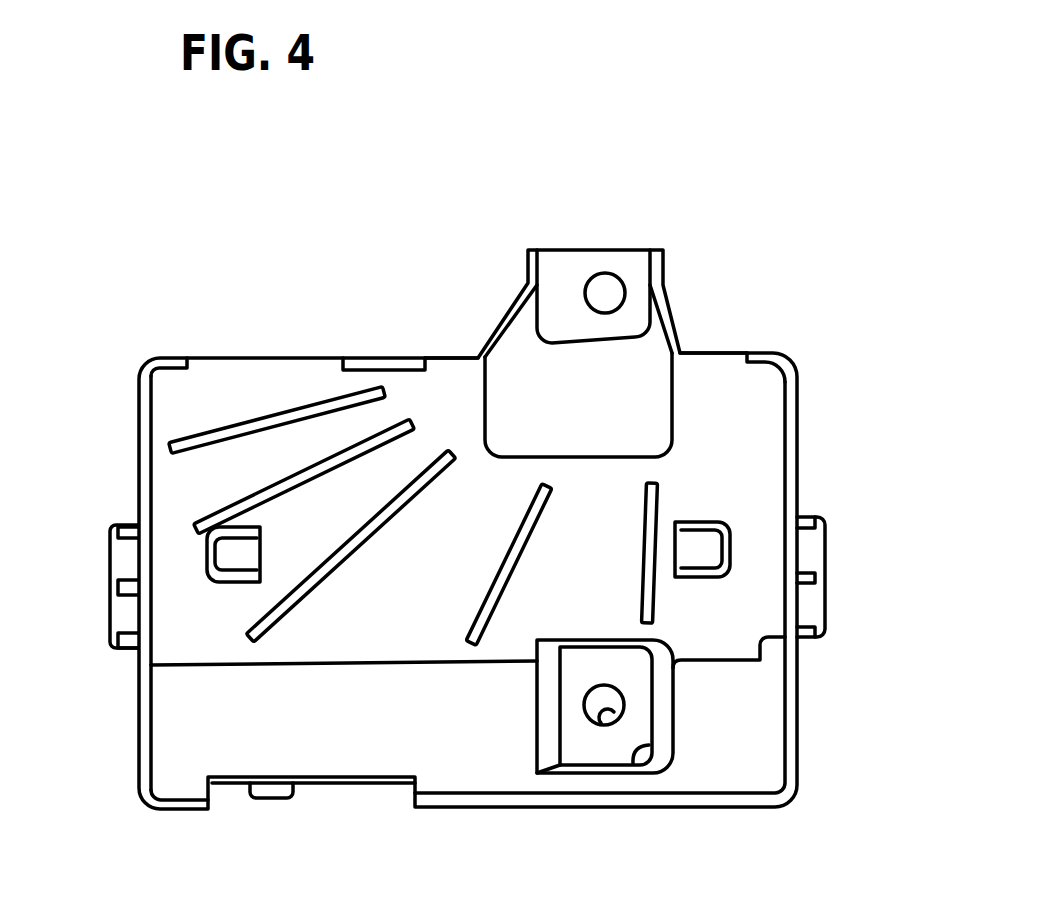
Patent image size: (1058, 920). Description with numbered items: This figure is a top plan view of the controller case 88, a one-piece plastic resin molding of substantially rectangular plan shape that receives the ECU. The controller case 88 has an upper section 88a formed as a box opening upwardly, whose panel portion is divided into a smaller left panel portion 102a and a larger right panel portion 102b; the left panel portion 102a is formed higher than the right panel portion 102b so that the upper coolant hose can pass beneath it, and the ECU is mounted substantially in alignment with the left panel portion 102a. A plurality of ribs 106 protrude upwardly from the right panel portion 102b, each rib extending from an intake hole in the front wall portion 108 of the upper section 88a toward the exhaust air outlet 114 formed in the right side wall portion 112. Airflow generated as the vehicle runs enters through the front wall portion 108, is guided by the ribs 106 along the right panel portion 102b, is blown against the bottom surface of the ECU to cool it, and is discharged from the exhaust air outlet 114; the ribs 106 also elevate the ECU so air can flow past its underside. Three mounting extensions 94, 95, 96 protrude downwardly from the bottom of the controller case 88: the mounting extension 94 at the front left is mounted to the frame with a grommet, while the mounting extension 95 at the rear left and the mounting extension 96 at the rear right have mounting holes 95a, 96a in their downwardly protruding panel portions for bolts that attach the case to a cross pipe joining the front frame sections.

The controller case 88 is at (758, 331).
The upper section 88a is at (816, 376).
The mounting extension 94 is at (315, 787).
The mounting extension 95 is at (660, 715).
The mounting hole 95a is at (606, 715).
The mounting extension 96 is at (621, 314).
The mounting hole 96a is at (601, 290).
The left panel portion 102a is at (748, 700).
The right panel portion 102b is at (743, 432).
The ribs 106 is at (263, 417).
The front wall portion 108 is at (138, 687).
The right side wall portion 112 is at (378, 357).
The exhaust air outlet 114 is at (452, 357).